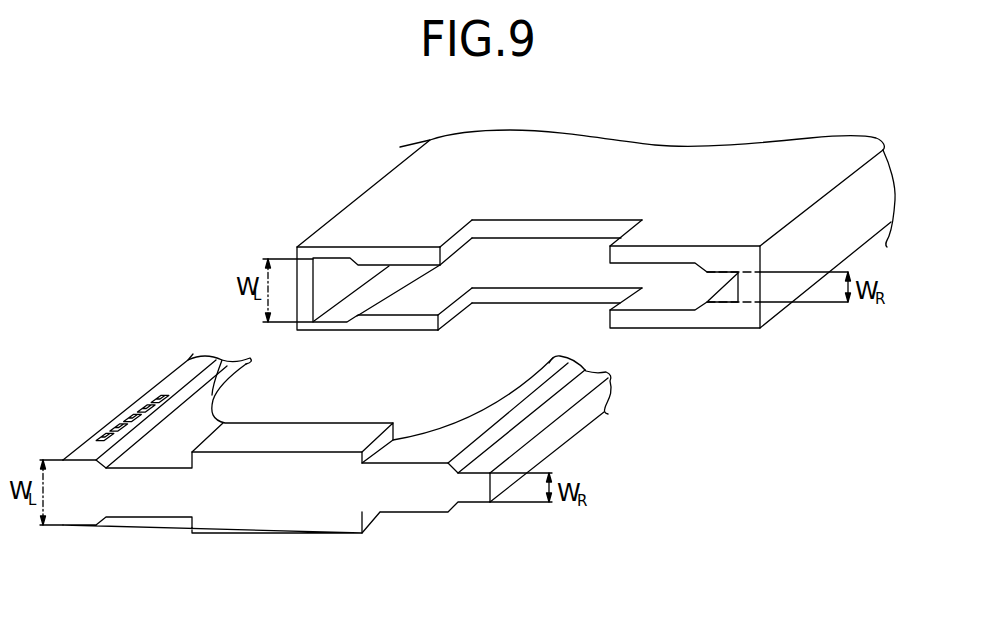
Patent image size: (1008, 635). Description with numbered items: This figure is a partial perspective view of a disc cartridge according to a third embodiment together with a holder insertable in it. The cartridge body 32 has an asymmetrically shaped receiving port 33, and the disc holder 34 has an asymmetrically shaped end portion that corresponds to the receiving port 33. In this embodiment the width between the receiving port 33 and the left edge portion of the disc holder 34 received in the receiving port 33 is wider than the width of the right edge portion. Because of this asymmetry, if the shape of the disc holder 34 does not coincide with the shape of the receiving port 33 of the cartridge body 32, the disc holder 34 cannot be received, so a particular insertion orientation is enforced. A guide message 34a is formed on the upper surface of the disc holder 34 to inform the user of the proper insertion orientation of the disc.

The cartridge body 32 is at (385, 197).
The receiving port 33 is at (418, 301).
The disc holder 34 is at (415, 507).
The guide message 34a is at (140, 401).